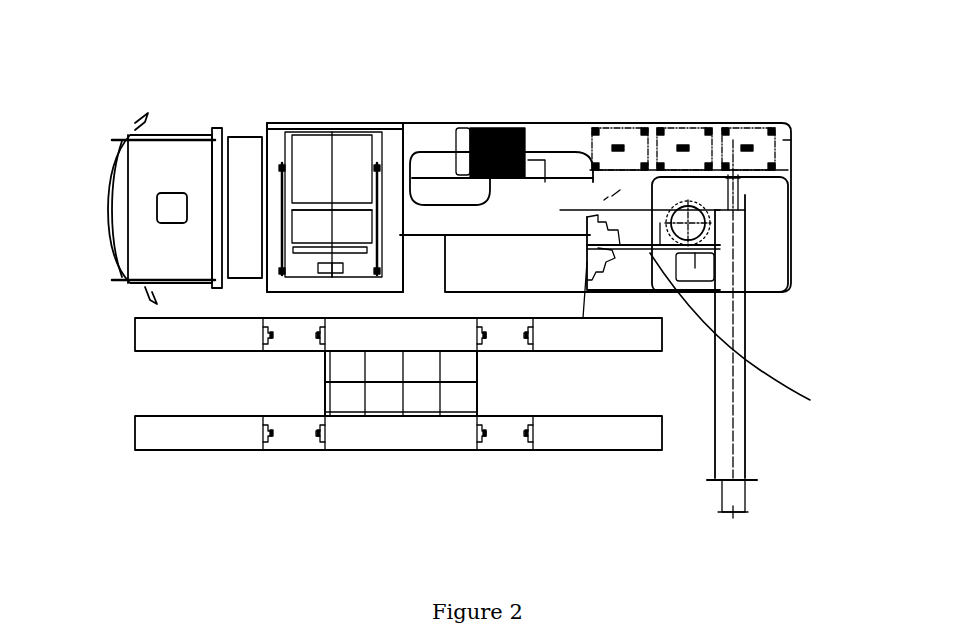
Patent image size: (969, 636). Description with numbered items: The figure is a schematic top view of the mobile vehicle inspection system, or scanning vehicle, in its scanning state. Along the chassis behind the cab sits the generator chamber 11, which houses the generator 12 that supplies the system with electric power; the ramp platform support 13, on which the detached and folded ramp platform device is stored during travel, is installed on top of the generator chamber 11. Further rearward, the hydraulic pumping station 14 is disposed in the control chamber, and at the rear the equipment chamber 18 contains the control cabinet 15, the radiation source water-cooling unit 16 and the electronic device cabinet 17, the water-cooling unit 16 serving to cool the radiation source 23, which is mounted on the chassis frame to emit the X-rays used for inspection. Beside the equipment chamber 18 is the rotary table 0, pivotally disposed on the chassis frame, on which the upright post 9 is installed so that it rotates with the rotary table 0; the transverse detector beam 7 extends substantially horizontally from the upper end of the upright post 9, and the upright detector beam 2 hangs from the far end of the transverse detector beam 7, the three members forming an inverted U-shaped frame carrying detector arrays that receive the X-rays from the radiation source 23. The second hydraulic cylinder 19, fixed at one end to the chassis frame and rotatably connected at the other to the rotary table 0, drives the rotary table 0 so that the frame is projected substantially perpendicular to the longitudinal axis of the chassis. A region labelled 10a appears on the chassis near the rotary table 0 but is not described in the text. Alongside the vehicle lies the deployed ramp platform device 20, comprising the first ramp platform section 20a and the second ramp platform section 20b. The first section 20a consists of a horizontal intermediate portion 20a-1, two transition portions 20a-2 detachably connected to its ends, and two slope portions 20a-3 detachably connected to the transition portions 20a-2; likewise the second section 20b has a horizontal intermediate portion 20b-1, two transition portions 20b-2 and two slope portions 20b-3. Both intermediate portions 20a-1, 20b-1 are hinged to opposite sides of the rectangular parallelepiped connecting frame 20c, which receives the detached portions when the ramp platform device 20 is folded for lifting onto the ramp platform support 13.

The rotary table 0 is at (590, 217).
The upright detector beam 2 is at (740, 498).
The transverse detector beam 7 is at (727, 342).
The upright post 9 is at (706, 213).
The mast support platform 10a is at (768, 267).
The generator chamber 11 is at (275, 123).
The generator 12 is at (345, 147).
The ramp platform support 13 is at (388, 127).
The hydraulic pumping station 14 is at (485, 135).
The control cabinet 15 is at (616, 145).
The radiation source water-cooling unit 16 is at (679, 145).
The electronic device cabinet 17 is at (741, 145).
The equipment chamber 18 is at (780, 150).
The second hydraulic cylinder 19 is at (743, 334).
The ramp platform device 20 is at (351, 416).
The first ramp platform section 20a is at (391, 480).
The horizontal intermediate portion 20a-1 is at (393, 440).
The transition portion 20a-2 is at (302, 440).
The slope portion 20a-3 is at (190, 433).
The second ramp platform section 20b is at (351, 339).
The horizontal intermediate portion 20b-1 is at (338, 338).
The transition portion 20b-2 is at (240, 352).
The slope portion 20b-3 is at (153, 340).
The connecting frame 20c is at (477, 390).
The radiation source 23 is at (733, 140).